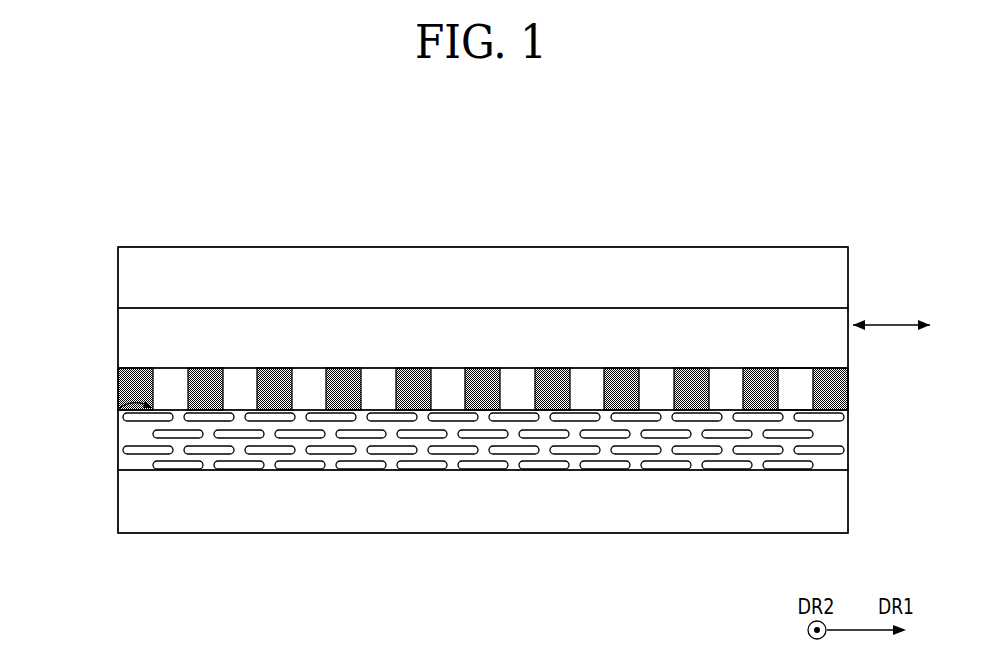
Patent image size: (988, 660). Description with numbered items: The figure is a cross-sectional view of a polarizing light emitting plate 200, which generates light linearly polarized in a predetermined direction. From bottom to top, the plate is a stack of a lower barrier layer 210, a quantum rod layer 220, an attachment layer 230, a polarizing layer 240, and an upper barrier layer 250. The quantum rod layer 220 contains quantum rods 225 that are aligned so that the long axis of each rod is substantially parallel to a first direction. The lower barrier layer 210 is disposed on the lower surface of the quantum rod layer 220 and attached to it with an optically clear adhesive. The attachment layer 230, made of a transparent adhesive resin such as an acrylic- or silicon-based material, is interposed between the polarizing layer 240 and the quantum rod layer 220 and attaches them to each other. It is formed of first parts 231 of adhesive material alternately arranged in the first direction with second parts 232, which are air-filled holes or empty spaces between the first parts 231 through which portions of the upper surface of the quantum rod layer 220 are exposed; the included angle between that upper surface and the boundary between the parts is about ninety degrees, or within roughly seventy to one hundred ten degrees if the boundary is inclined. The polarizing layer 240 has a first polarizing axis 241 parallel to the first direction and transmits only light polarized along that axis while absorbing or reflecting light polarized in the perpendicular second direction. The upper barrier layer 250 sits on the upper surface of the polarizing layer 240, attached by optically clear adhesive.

The polarizing light emitting plate 200 is at (744, 206).
The lower barrier layer 210 is at (130, 500).
The quantum rod layer 220 is at (486, 440).
The quantum rods 225 is at (820, 450).
The attachment layer 230 is at (486, 376).
The first part 231 is at (840, 388).
The second part 232 is at (800, 378).
The polarizing layer 240 is at (130, 335).
The first polarizing axis 241 is at (891, 313).
The upper barrier layer 250 is at (130, 275).